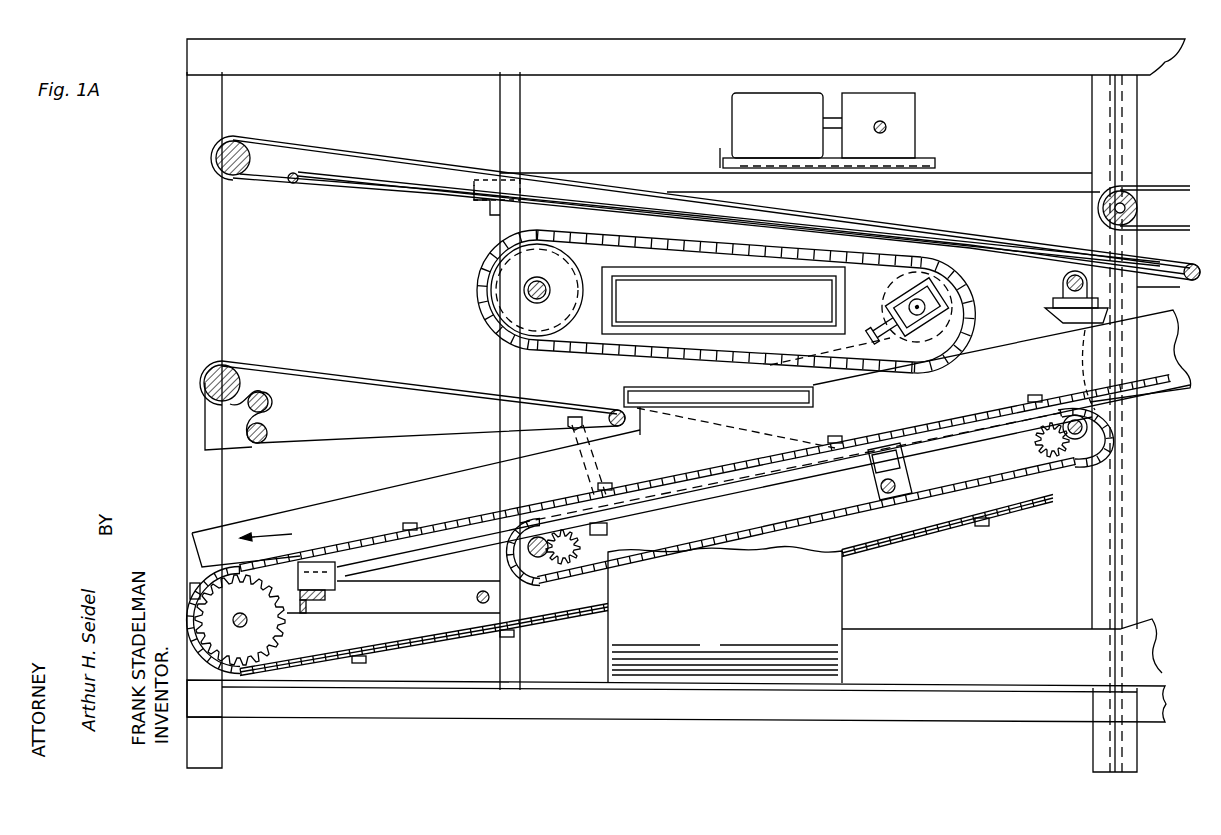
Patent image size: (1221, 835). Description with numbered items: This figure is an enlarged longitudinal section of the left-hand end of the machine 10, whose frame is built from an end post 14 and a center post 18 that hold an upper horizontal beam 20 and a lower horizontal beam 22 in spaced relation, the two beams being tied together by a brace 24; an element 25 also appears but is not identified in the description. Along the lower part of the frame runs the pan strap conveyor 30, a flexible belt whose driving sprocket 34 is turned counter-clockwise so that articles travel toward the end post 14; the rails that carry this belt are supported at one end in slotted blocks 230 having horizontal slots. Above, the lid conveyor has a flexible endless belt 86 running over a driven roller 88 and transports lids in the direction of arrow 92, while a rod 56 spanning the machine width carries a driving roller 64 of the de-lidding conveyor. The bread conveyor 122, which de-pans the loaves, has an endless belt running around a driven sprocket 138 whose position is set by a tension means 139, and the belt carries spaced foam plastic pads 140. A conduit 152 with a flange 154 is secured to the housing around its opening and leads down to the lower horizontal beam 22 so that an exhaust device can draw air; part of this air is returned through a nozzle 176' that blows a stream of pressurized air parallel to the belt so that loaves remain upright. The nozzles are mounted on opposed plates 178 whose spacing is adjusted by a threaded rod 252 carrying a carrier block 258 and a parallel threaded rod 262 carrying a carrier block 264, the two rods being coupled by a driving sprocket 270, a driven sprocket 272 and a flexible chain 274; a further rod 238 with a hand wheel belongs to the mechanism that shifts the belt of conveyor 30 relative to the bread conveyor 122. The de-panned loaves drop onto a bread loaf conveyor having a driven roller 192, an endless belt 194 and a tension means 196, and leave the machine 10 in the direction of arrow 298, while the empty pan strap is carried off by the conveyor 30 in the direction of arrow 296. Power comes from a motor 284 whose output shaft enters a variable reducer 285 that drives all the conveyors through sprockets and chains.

The machine 10 is at (754, 41).
The end post 14 is at (207, 166).
The center post 18 is at (1125, 552).
The upper horizontal beam 20 is at (420, 47).
The lower horizontal beam 22 is at (605, 705).
The brace 24 is at (510, 657).
The shelf 25 is at (680, 183).
The conveyor 30 is at (690, 473).
The driving sprocket 34 is at (272, 628).
The rod 56 is at (1104, 212).
The driving roller 64 is at (1140, 196).
The flexible endless belt 86 is at (1005, 248).
The driven roller 88 is at (1193, 283).
The arrow 92 is at (332, 130).
The bread conveyor 122 is at (468, 296).
The driven sprocket 138 is at (956, 312).
The tension means 139 is at (893, 304).
The foam plastic pads 140 is at (490, 266).
The conduit 152 is at (825, 593).
The flange 154 is at (687, 270).
The nozzle 176' is at (759, 401).
The plates 178 is at (370, 517).
The driven roller 192 is at (611, 412).
The endless belt 194 is at (433, 388).
The tension means 196 is at (270, 404).
The slotted blocks 230 is at (325, 582).
The rod 238 is at (1066, 284).
The rod 252 is at (1090, 428).
The carrier block 258 is at (1040, 440).
The rod 262 is at (505, 557).
The carrier block 264 is at (541, 560).
The driving sprocket 270 is at (1068, 458).
The driven sprocket 272 is at (582, 553).
The flexible chain 274 is at (845, 524).
The motor 284 is at (827, 130).
The variable reducer 285 is at (908, 110).
The arrow 296 is at (275, 522).
The arrow 298 is at (292, 353).